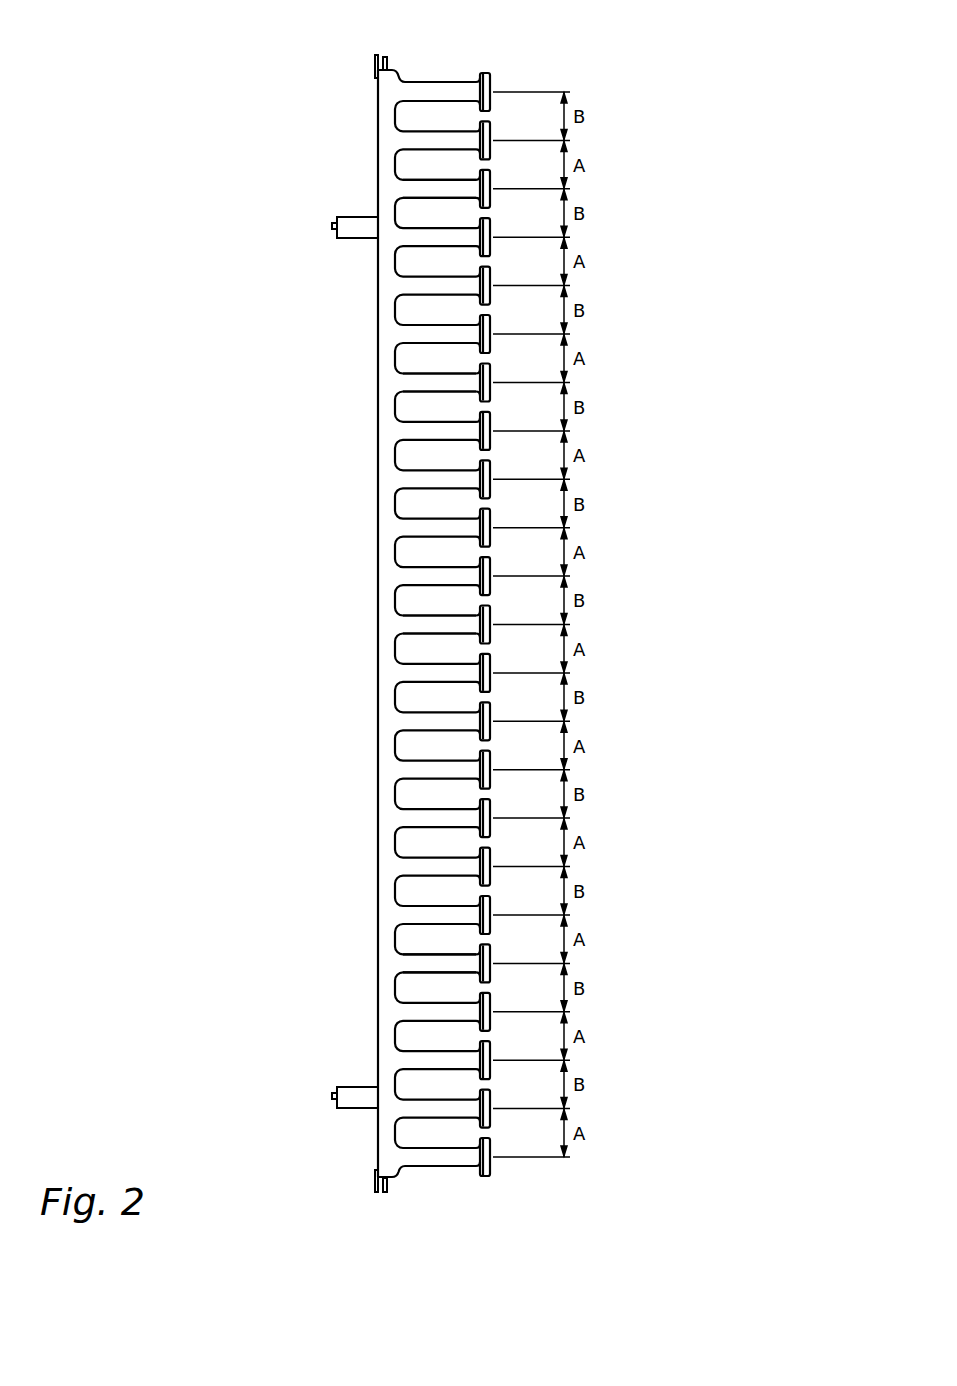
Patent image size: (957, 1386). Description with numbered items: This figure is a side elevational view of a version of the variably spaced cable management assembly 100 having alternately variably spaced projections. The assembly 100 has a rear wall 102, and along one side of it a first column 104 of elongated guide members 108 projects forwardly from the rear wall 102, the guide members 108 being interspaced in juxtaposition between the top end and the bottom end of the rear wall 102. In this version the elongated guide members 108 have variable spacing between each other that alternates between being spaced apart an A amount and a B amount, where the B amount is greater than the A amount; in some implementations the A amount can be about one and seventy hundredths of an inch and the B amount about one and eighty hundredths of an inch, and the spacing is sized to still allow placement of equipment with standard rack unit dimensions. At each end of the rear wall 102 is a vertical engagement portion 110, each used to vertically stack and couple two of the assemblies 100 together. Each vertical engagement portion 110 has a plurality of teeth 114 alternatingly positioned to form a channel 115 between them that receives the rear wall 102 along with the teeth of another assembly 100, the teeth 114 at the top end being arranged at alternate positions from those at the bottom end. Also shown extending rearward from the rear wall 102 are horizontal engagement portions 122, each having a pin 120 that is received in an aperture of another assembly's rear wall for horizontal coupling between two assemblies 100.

The variably spaced cable management assembly 100 is at (515, 623).
The rear wall 102 is at (378, 133).
The first column 104 is at (484, 50).
The elongated guide member 108 is at (430, 92).
The vertical engagement portion 110 is at (364, 51).
The tooth 114 is at (389, 63).
The channel 115 is at (382, 41).
The pin 120 is at (332, 227).
The horizontal engagement portion 122 is at (288, 227).